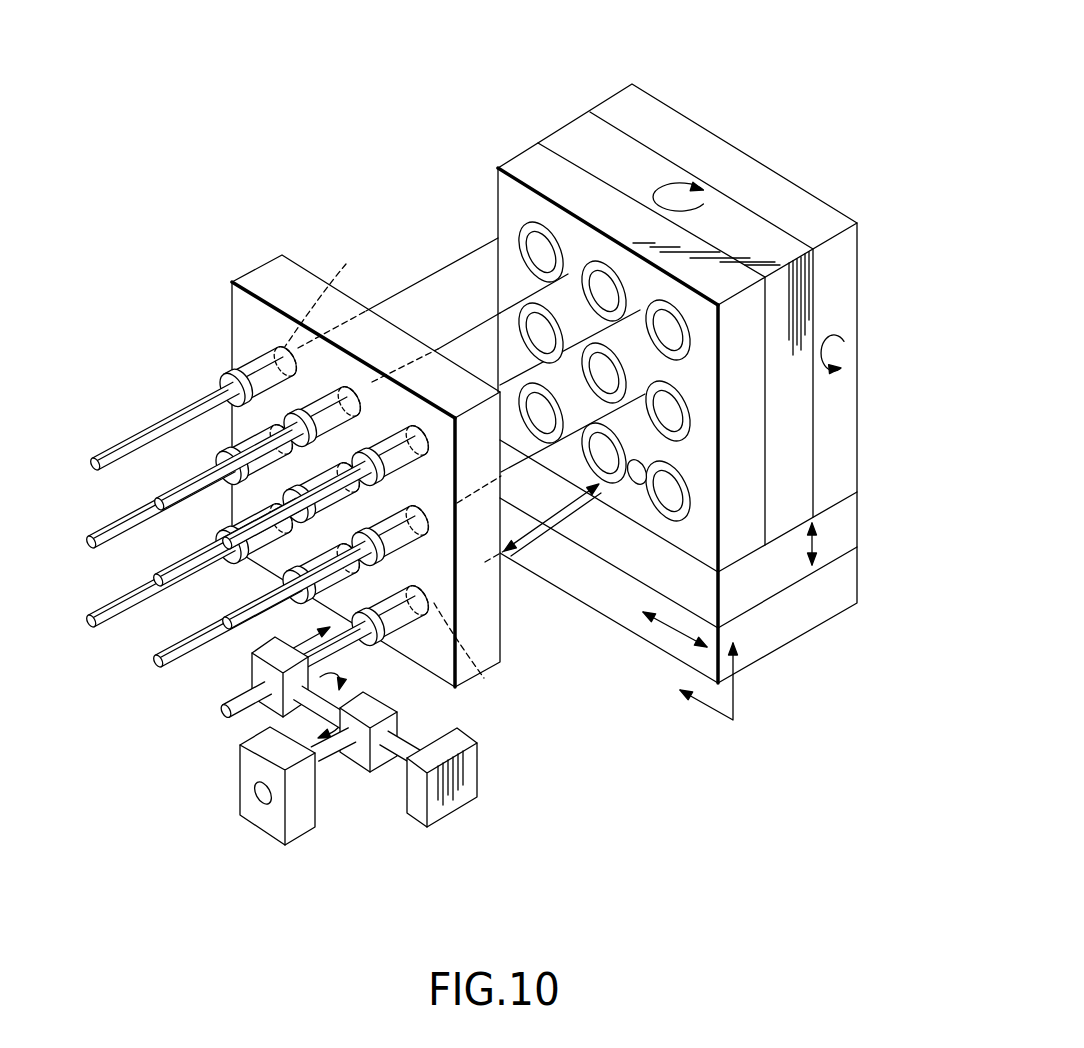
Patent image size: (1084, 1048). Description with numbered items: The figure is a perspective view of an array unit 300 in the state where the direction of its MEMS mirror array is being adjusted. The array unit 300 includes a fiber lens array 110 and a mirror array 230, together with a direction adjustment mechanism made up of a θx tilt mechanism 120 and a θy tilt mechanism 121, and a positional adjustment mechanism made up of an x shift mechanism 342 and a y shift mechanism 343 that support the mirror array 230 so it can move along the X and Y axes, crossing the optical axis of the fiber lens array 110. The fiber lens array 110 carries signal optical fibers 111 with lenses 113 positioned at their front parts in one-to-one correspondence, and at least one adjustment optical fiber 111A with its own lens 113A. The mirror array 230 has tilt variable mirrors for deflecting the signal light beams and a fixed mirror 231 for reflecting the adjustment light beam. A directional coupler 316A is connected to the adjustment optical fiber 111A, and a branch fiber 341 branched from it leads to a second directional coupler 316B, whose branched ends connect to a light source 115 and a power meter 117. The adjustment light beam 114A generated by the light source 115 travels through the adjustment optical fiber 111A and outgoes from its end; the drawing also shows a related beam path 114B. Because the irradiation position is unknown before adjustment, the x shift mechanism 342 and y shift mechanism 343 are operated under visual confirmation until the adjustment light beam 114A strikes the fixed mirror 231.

The array unit 300 is at (312, 88).
The fiber lens array 110 is at (261, 272).
The signal optical fibers 111 is at (188, 400).
The adjustment optical fiber 111A is at (358, 648).
The lenses 113 is at (345, 266).
The lens 113A is at (486, 679).
The adjustment light beam 114A is at (590, 491).
The guide member 114B is at (547, 531).
The light source 115 is at (468, 772).
The power meter 117 is at (242, 777).
The θx tilt mechanism 120 is at (682, 370).
The θy tilt mechanism 121 is at (570, 137).
The mirror array 230 is at (530, 163).
The fixed mirror 231 is at (647, 466).
The directional coupler 316A is at (258, 660).
The directional coupler 316B is at (380, 776).
The branch fiber 341 is at (298, 712).
The x shift mechanism 342 is at (767, 638).
The y shift mechanism 343 is at (825, 556).